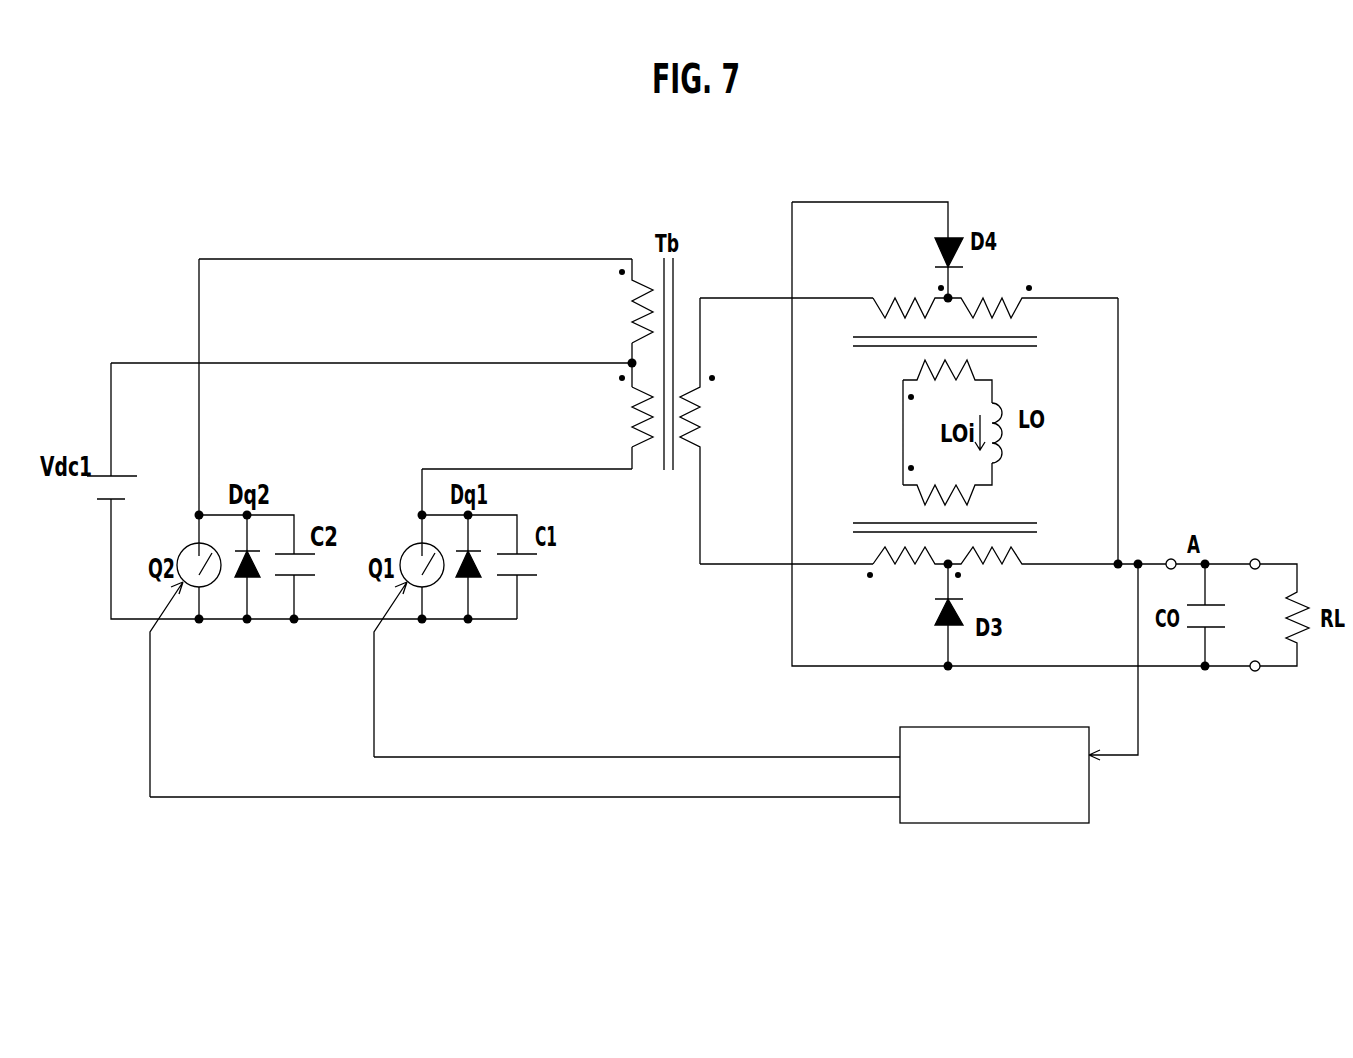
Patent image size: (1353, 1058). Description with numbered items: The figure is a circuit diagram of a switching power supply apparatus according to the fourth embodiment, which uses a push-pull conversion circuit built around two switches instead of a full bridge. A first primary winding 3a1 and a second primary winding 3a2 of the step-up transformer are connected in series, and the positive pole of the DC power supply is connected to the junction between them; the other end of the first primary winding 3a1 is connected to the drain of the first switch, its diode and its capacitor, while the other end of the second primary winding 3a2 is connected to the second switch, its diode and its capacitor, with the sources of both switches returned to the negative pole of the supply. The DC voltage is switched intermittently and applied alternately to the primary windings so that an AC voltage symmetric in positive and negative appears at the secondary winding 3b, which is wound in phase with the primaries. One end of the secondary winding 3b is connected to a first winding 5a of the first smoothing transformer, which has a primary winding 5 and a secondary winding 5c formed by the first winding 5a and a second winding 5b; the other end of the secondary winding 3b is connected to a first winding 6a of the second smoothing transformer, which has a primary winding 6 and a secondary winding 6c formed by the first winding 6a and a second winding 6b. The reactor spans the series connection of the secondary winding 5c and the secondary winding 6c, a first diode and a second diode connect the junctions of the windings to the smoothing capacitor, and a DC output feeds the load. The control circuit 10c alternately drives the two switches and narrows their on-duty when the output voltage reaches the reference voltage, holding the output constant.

The first primary winding 3a1 is at (610, 450).
The second primary winding 3a2 is at (611, 292).
The secondary winding 3b is at (717, 450).
The primary winding 5 is at (1043, 327).
The first winding 5a is at (918, 290).
The second winding 5b is at (975, 290).
The secondary winding 5c is at (925, 390).
The primary winding 6 is at (1040, 543).
The first winding 6a is at (885, 575).
The second winding 6b is at (1015, 575).
The secondary winding 6c is at (968, 475).
The control circuit 10c is at (1057, 823).